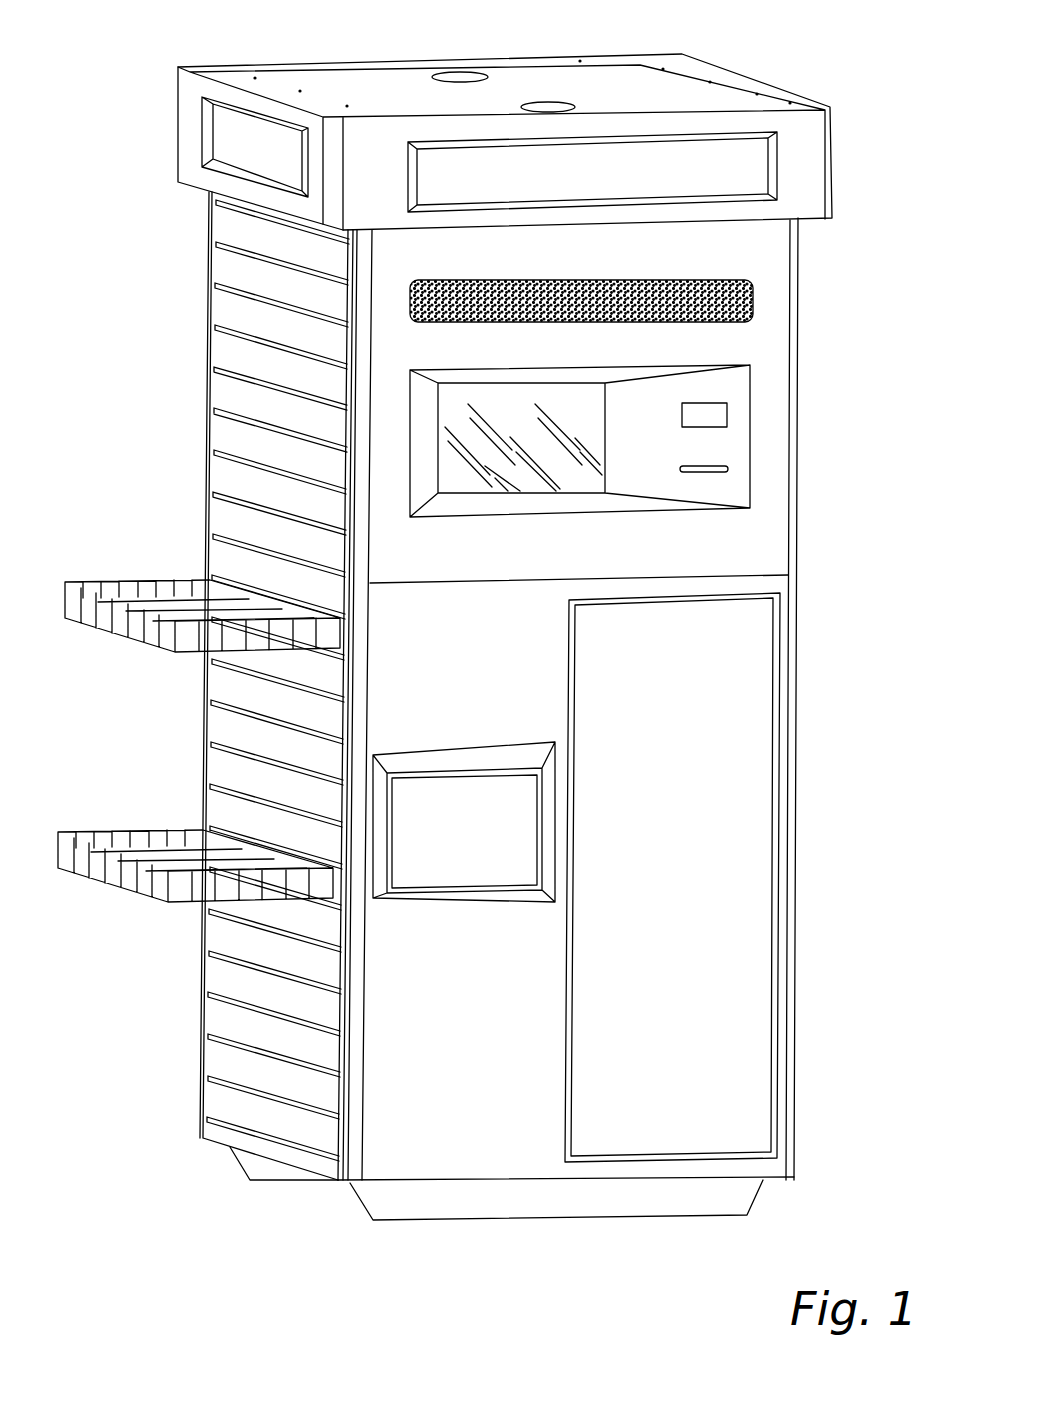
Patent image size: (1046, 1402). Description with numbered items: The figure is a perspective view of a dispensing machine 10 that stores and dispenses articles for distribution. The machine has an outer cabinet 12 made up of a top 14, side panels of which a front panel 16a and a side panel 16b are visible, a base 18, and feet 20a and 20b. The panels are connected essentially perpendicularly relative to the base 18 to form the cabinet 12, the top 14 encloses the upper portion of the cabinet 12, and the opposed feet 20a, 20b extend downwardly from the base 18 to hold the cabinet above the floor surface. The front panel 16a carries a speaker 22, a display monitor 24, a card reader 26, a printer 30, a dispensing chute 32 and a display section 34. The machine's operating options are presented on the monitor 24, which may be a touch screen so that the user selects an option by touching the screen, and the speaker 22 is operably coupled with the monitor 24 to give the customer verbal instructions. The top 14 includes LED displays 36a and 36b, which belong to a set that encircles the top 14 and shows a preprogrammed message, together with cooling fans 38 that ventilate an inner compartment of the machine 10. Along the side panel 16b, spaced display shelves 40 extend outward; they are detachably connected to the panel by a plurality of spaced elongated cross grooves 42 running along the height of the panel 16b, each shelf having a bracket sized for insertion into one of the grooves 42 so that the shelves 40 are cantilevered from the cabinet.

The dispensing machine 10 is at (818, 955).
The outer cabinet 12 is at (793, 352).
The top 14 is at (833, 147).
The front panel 16a is at (450, 644).
The side panel 16b is at (283, 424).
The base 18 is at (797, 1178).
The foot 20a is at (367, 1198).
The foot 20b is at (246, 1165).
The speaker 22 is at (716, 292).
The display monitor 24 is at (522, 412).
The card reader 26 is at (729, 413).
The printer 30 is at (729, 468).
The dispensing chute 32 is at (483, 758).
The display section 34 is at (755, 714).
The LED display 36a is at (633, 184).
The LED display 36b is at (285, 158).
The cooling fans 38 is at (456, 73).
The display shelves 40 is at (190, 580).
The cross grooves 42 is at (222, 333).